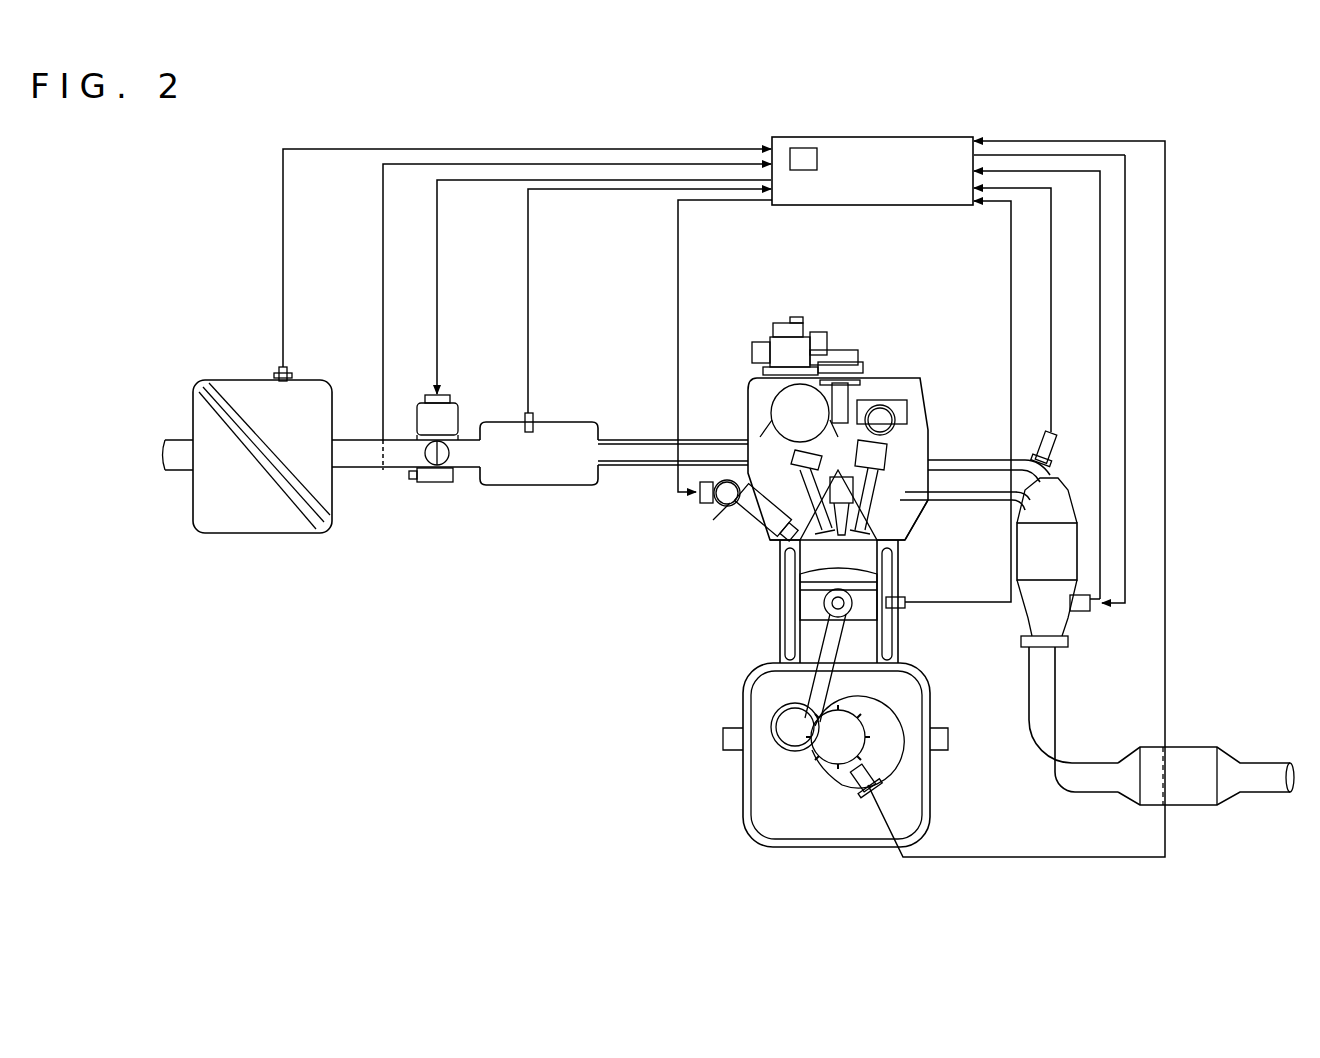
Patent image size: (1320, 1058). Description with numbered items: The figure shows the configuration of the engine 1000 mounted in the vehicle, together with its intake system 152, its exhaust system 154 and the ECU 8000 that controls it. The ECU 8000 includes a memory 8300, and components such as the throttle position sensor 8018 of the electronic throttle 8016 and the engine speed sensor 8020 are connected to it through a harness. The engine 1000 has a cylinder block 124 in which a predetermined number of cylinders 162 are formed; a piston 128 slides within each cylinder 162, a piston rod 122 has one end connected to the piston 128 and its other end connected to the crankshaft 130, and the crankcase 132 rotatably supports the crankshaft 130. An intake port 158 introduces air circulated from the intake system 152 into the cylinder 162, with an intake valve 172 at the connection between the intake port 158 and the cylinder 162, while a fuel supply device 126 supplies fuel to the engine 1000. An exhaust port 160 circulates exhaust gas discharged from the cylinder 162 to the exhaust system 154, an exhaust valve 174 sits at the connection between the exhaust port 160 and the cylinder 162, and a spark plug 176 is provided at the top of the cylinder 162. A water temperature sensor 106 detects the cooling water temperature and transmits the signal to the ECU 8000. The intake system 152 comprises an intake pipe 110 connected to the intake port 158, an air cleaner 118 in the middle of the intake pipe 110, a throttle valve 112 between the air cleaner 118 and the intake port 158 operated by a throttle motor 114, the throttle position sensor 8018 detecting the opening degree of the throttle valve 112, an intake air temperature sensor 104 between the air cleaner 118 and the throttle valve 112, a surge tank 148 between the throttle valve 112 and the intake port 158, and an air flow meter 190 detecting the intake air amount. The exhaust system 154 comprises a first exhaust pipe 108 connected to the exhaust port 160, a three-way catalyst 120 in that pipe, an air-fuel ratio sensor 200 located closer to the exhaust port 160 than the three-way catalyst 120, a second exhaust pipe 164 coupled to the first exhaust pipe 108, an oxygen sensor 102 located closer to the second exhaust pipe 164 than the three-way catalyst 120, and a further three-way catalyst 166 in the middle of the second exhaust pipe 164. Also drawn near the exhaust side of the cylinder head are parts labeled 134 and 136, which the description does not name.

The ECU 8000 is at (922, 137).
The memory 8300 is at (803, 148).
The oxygen sensor 102 is at (1083, 612).
The intake air temperature sensor 104 is at (292, 367).
The water temperature sensor 106 is at (910, 607).
The first exhaust pipe 108 is at (945, 461).
The intake pipe 110 is at (660, 437).
The throttle valve 112 is at (458, 474).
The throttle motor 114 is at (460, 415).
The air cleaner 118 is at (325, 531).
The three-way catalyst 120 is at (1052, 568).
The piston rod 122 is at (780, 655).
The cylinder block 124 is at (835, 537).
The fuel supply device 126 is at (747, 528).
The piston 128 is at (808, 606).
The crankshaft 130 is at (890, 763).
The crankcase 132 is at (743, 717).
The exhaust valve 134 is at (936, 420).
The exhaust port 136 is at (930, 378).
The surge tank 148 is at (535, 486).
The intake system 152 is at (590, 416).
The exhaust system 154 is at (1072, 496).
The intake port 158 is at (762, 428).
The exhaust port 160 is at (895, 517).
The cylinder 162 is at (865, 638).
The second exhaust pipe 164 is at (1072, 778).
The three-way catalyst 166 is at (1206, 747).
The intake valve 172 is at (762, 345).
The exhaust valve 174 is at (925, 378).
The spark plug 176 is at (800, 585).
The air flow meter 190 is at (533, 413).
The air-fuel ratio sensor 200 is at (1053, 436).
The engine 1000 is at (880, 367).
The electronic throttle 8016 is at (456, 368).
The throttle position sensor 8018 is at (428, 480).
The engine speed sensor 8020 is at (865, 797).